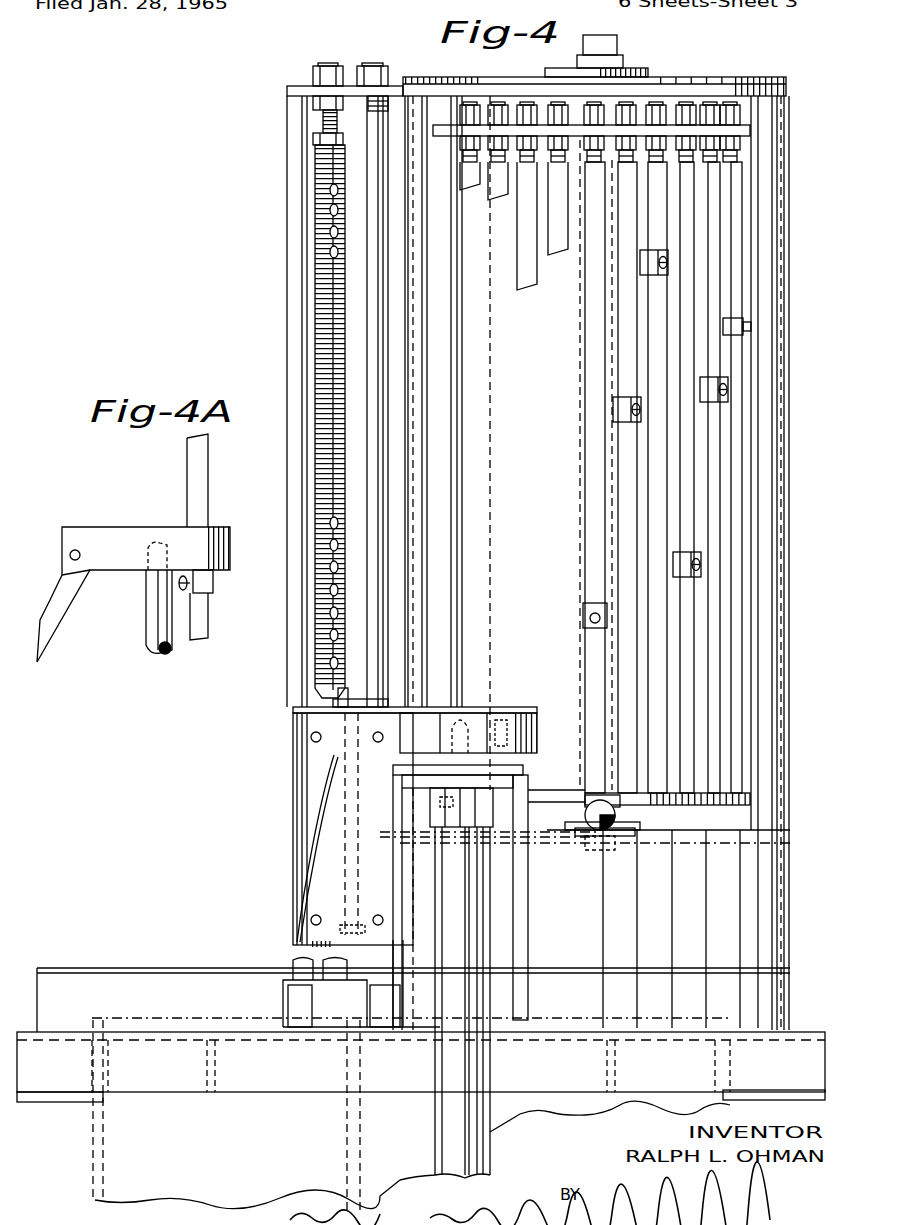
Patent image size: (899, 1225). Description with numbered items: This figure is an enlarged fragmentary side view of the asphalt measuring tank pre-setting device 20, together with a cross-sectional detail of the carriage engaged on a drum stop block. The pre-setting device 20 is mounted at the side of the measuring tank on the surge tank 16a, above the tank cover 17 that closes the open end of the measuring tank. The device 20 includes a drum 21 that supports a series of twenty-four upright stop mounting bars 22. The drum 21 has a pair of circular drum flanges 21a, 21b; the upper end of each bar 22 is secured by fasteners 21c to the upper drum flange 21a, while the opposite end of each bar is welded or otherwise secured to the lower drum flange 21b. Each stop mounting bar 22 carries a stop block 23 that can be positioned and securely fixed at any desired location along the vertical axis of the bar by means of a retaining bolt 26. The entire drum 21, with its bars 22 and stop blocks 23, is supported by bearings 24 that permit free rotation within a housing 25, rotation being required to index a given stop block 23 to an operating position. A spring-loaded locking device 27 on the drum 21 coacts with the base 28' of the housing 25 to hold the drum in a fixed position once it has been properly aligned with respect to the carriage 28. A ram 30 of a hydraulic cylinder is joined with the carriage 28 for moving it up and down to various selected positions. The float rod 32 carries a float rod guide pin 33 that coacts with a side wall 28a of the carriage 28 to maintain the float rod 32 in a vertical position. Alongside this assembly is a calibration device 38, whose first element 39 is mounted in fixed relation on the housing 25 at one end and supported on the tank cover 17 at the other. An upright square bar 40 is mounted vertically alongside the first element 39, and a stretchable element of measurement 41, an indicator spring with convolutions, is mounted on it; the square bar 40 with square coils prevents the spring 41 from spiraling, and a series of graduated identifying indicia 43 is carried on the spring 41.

In FIG. 4, the surge tank 16a is at (105, 1138).
In FIG. 4, the tank cover 17 is at (68, 1055).
In FIG. 4, the asphalt measuring tank pre-setting device 20 is at (788, 488).
In FIG. 4, the drum 21 is at (705, 690).
In FIG. 4, the drum flange 21a is at (744, 122).
In FIG. 4, the drum flange 21b is at (752, 797).
In FIG. 4, the fasteners 21c is at (714, 118).
In FIG. 4, the stop mounting bar 22 is at (735, 580).
In FIG. 4A, the stop mounting bar 22 is at (198, 497).
In FIG. 4, the stop block 23 is at (618, 408).
In FIG. 4A, the stop block 23 is at (212, 584).
In FIG. 4, the bearings 24 is at (605, 55).
In FIG. 4, the housing 25 is at (512, 62).
In FIG. 4, the retaining bolt 26 is at (735, 386).
In FIG. 4, the spring-loaded locking device 27 is at (618, 818).
In FIG. 4, the carriage 28 is at (390, 816).
In FIG. 4A, the carriage 28 is at (154, 594).
In FIG. 4, the base 28' is at (606, 929).
In FIG. 4, the side wall 28a is at (325, 835).
In FIG. 4A, the side wall 28a is at (137, 555).
In FIG. 4, the ram 30 is at (468, 1172).
In FIG. 4, the float rod 32 is at (350, 1152).
In FIG. 4, the float rod guide pin 33 is at (333, 915).
In FIG. 4, the calibration device 38 is at (286, 348).
In FIG. 4, the first element 39 is at (298, 282).
In FIG. 4, the upright square bar 40 is at (325, 118).
In FIG. 4, the stretchable element of measurement 41 is at (320, 160).
In FIG. 4, the graduated identifying indicia 43 is at (330, 200).